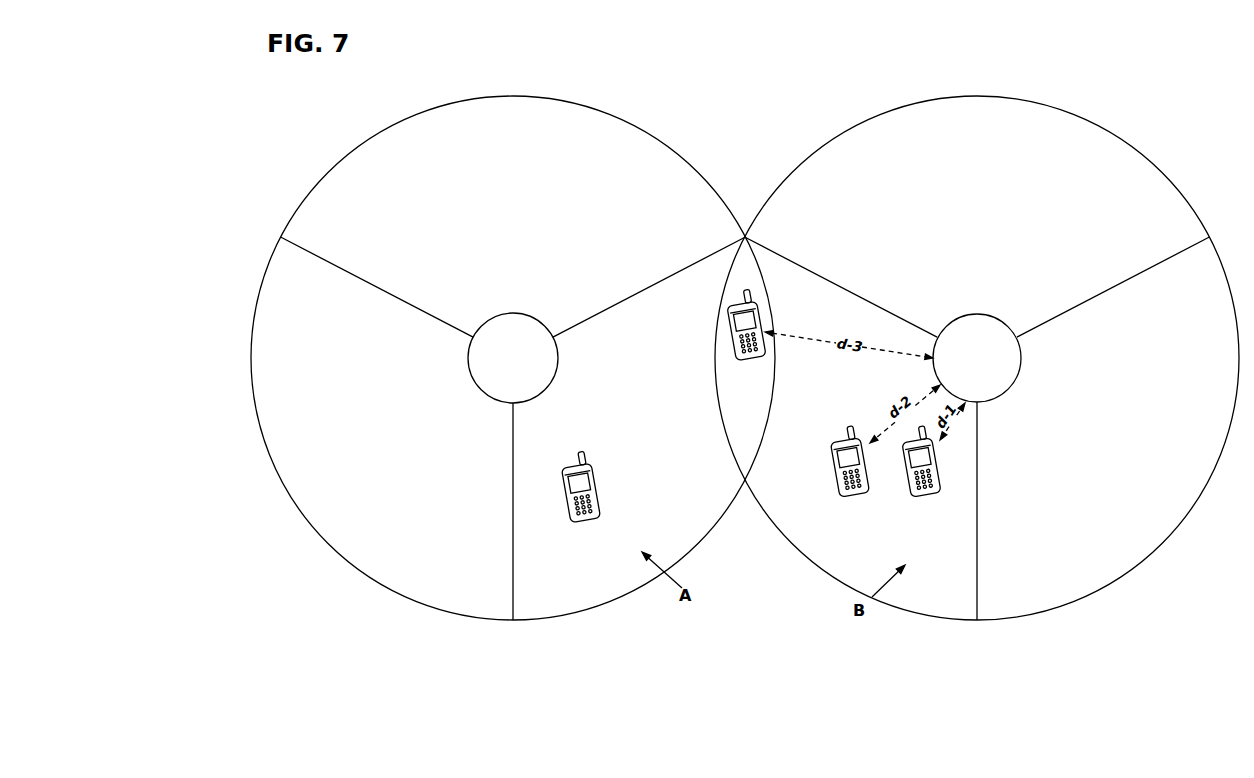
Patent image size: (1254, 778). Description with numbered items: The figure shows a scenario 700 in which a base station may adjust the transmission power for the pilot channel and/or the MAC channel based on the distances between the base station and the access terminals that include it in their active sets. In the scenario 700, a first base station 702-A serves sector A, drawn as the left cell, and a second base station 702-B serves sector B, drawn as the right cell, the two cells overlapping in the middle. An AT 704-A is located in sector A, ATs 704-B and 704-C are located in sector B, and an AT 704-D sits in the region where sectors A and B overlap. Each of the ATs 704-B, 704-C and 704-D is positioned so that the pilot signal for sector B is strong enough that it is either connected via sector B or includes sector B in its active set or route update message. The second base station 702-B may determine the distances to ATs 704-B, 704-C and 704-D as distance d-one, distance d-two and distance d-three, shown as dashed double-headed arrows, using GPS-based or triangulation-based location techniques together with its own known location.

The scenario 700 is at (1094, 660).
The first base station 702-A is at (557, 376).
The second base station 702-B is at (1019, 377).
The access terminal 704-A is at (598, 486).
The access terminal 704-B is at (918, 493).
The access terminal 704-C is at (867, 479).
The access terminal 704-D is at (745, 360).